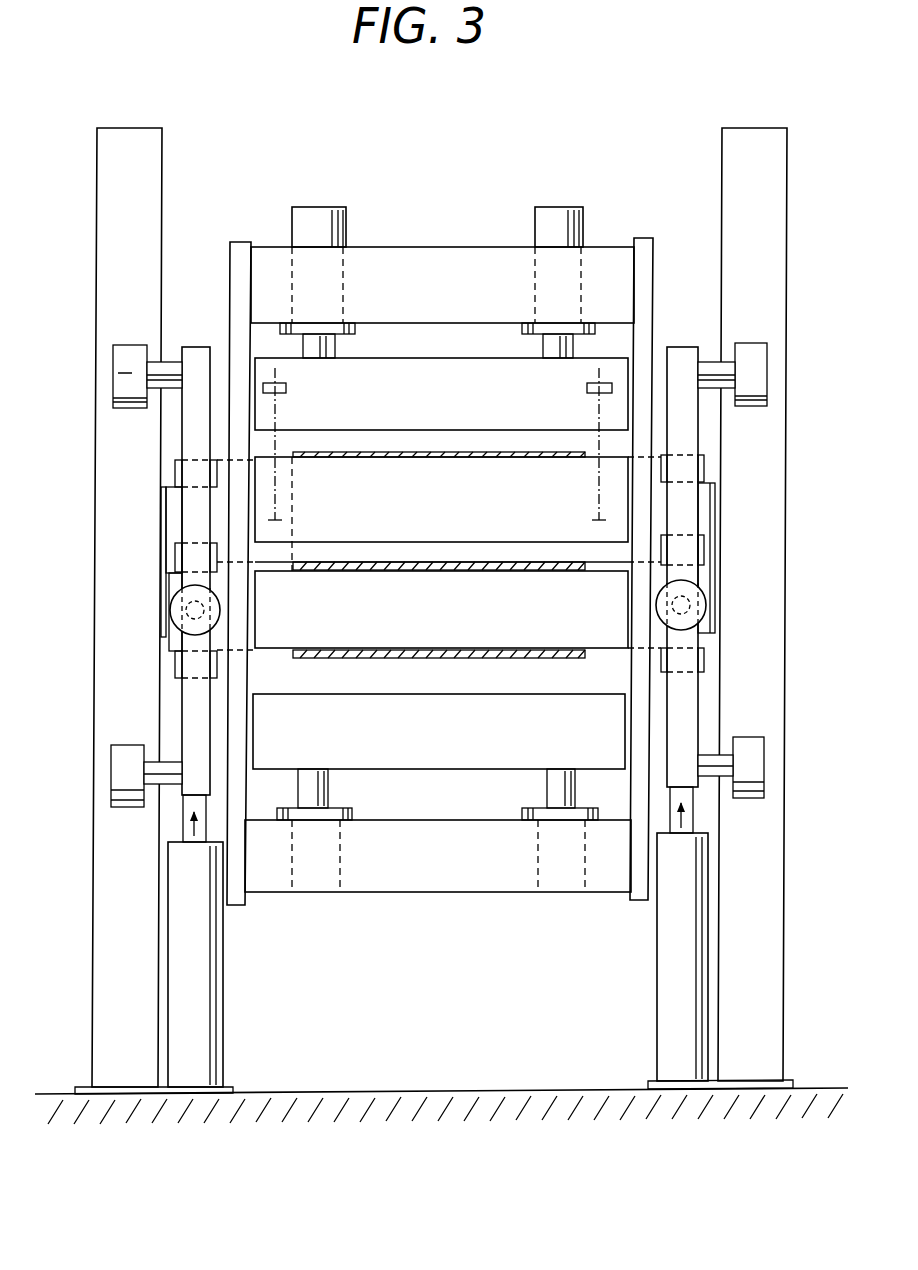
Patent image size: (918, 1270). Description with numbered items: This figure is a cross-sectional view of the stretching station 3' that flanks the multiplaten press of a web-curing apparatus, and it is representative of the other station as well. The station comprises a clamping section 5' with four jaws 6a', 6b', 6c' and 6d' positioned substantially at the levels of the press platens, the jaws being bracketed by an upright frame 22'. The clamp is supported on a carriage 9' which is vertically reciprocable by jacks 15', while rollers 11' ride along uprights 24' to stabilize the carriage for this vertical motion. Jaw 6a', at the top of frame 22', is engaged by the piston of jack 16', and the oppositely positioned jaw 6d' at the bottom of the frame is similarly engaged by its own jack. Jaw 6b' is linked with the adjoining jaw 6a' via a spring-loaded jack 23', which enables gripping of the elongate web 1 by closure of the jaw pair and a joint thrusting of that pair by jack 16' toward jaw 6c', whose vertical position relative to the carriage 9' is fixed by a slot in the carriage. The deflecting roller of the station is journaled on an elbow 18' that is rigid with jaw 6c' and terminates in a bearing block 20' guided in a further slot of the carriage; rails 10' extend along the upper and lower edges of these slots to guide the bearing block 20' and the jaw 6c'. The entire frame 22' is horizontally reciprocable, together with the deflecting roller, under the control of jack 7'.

The stretching station 3' is at (496, 155).
The clamping section 5' is at (442, 263).
The elongate web 1 is at (516, 431).
The jaw 6a' is at (441, 394).
The jaw 6b' is at (441, 499).
The jaw 6c' is at (441, 605).
The jaw 6d' is at (439, 731).
The jack 7' is at (437, 606).
The carriage 9' is at (441, 549).
The rails 10' is at (445, 569).
The rollers 11' is at (443, 782).
The jack 15' is at (438, 937).
The jack 16' is at (440, 260).
The elbow 18' is at (135, 562).
The bearing block 20' is at (445, 563).
The upright frame 22' is at (461, 547).
The spring-loaded jack 23' is at (437, 444).
The uprights 24' is at (464, 607).